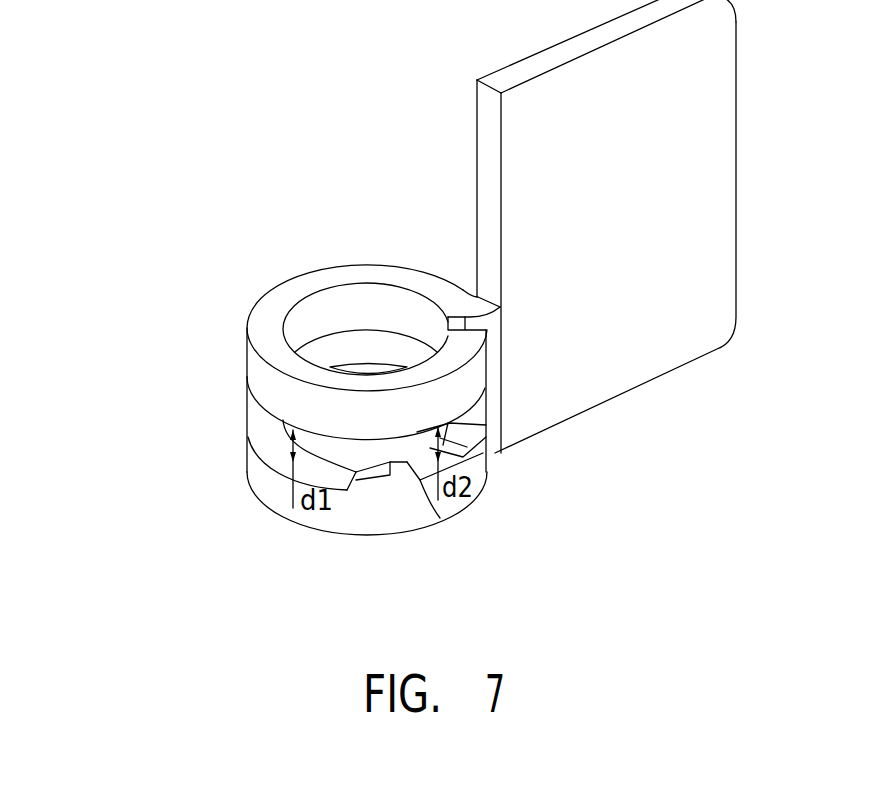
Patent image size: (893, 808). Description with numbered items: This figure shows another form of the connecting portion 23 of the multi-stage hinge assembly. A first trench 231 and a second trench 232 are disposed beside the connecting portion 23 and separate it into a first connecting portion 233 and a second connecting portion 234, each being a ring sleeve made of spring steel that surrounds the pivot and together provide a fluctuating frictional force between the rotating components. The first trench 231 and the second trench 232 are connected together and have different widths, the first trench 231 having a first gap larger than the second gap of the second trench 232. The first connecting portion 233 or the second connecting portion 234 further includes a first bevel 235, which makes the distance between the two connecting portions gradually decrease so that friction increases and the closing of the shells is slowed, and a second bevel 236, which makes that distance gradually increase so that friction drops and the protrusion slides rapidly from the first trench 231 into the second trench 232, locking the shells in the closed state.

The connecting portion 23 is at (128, 160).
The first trench 231 is at (268, 433).
The second trench 232 is at (447, 462).
The first connecting portion 233 is at (275, 390).
The second connecting portion 234 is at (272, 490).
The first bevel 235 is at (372, 477).
The second bevel 236 is at (405, 470).